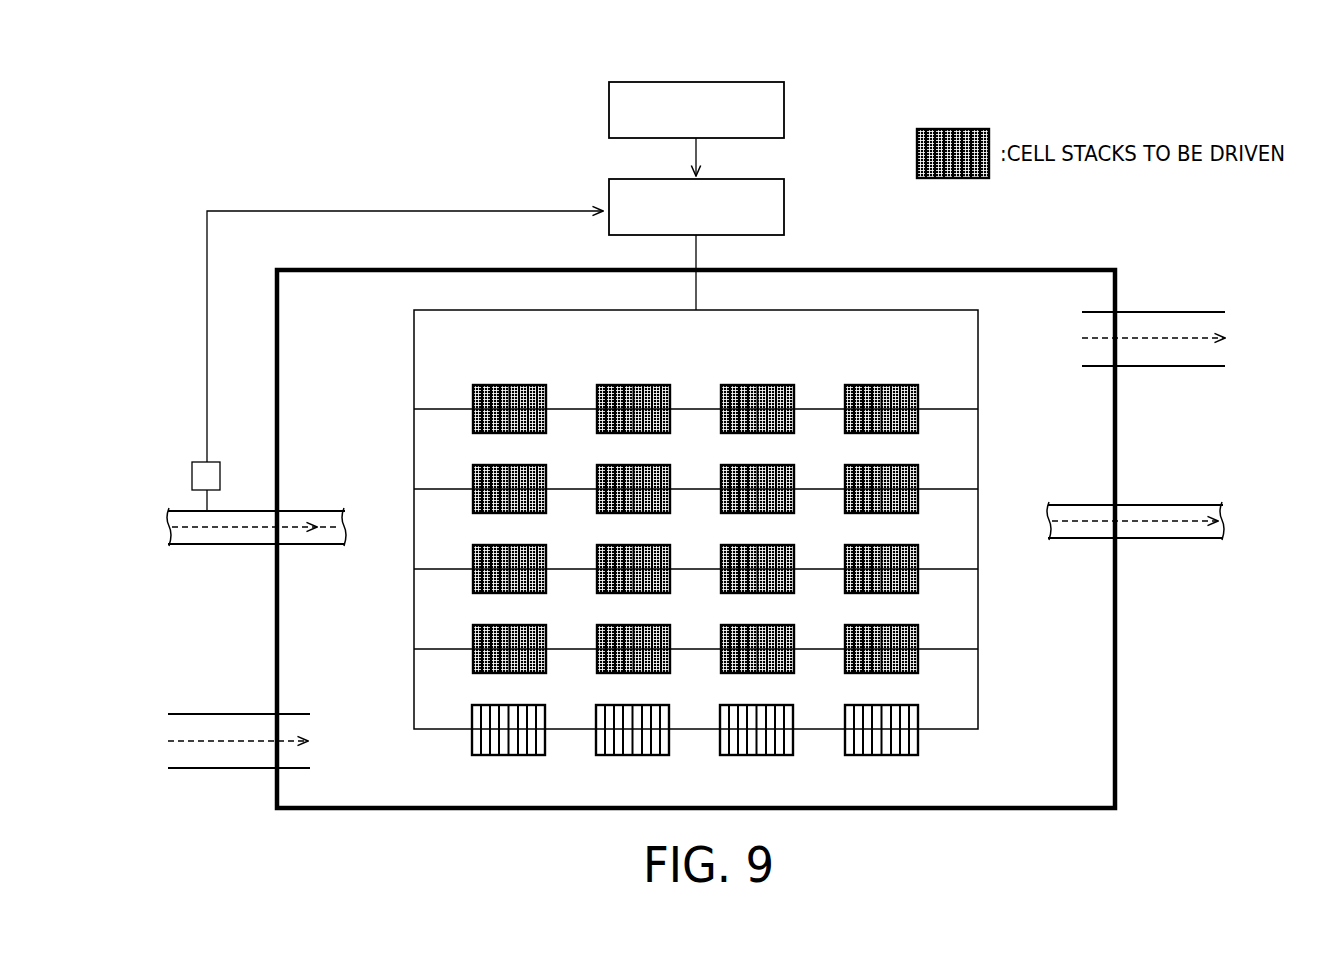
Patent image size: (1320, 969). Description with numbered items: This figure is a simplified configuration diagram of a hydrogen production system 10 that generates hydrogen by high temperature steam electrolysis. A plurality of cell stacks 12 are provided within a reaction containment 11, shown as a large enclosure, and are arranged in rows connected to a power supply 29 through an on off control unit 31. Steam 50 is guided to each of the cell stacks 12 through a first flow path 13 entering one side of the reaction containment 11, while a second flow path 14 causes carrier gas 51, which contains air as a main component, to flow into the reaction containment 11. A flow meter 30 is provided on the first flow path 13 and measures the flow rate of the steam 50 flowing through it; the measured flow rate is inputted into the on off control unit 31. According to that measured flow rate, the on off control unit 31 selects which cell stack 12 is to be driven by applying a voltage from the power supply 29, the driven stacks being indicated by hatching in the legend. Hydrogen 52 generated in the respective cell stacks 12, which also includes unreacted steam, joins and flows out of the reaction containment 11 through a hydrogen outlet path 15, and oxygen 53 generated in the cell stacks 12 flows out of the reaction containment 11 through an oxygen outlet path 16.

The hydrogen production system 10 is at (334, 131).
The reaction containment 11 is at (884, 270).
The cell stack 12 is at (506, 376).
The first flow path 13 is at (247, 511).
The second flow path 14 is at (295, 714).
The hydrogen outlet path 15 is at (1166, 505).
The oxygen outlet path 16 is at (1098, 312).
The power supply 29 is at (722, 82).
The flow meter 30 is at (192, 478).
The on off control unit 31 is at (722, 178).
The steam 50 is at (287, 520).
The carrier gas 51 is at (292, 738).
The hydrogen 52 is at (1083, 518).
The oxygen 53 is at (1100, 338).